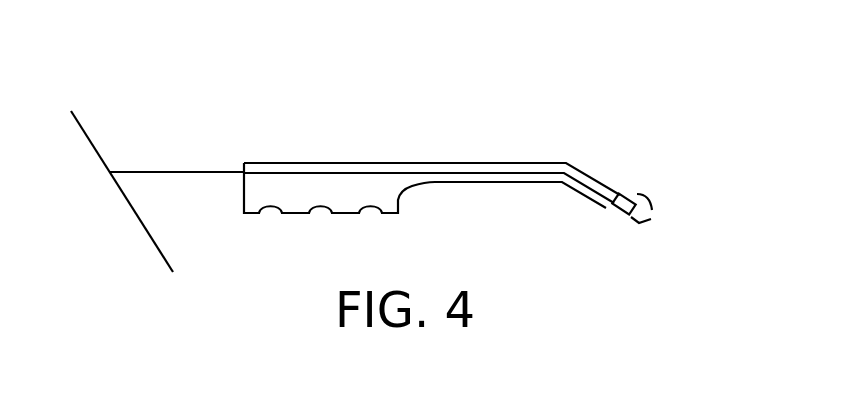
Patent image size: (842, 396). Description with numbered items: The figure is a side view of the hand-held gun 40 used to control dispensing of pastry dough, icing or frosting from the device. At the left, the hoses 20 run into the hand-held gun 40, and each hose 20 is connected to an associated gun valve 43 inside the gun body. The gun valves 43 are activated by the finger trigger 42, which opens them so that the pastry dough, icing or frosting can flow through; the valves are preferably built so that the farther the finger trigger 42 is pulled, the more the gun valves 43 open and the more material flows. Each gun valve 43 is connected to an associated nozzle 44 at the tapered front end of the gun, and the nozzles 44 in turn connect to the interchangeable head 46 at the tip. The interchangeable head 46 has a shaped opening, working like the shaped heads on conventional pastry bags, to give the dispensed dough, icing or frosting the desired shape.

The hoses 20 is at (161, 172).
The hand-held gun 40 is at (357, 168).
The finger trigger 42 is at (450, 208).
The gun valves 43 is at (305, 175).
The nozzles 44 is at (617, 196).
The interchangeable head 46 is at (644, 193).